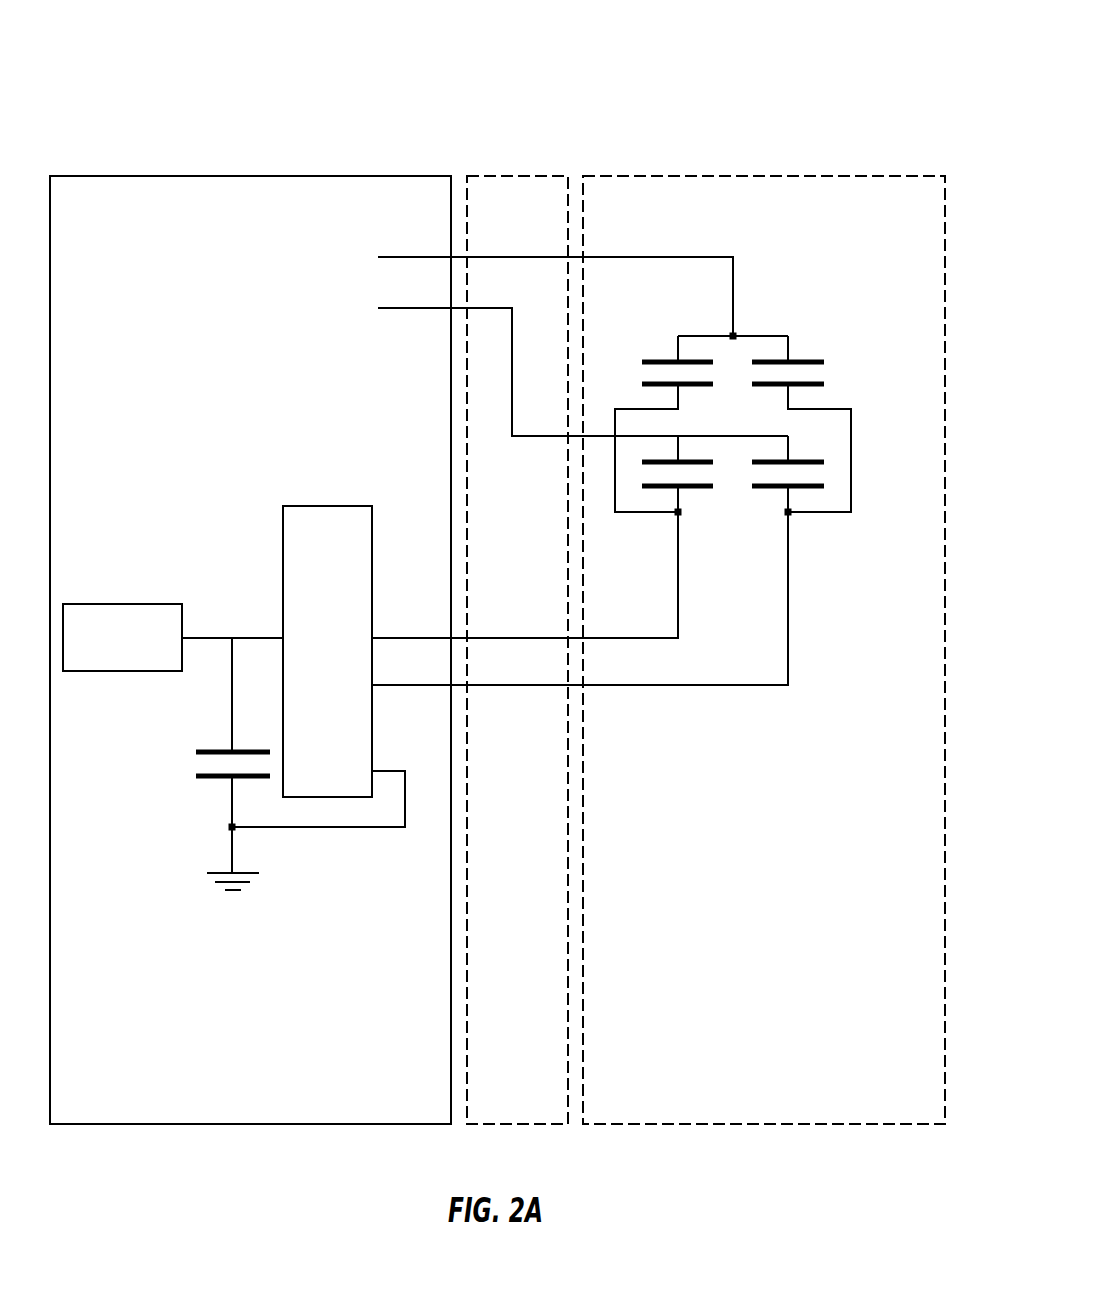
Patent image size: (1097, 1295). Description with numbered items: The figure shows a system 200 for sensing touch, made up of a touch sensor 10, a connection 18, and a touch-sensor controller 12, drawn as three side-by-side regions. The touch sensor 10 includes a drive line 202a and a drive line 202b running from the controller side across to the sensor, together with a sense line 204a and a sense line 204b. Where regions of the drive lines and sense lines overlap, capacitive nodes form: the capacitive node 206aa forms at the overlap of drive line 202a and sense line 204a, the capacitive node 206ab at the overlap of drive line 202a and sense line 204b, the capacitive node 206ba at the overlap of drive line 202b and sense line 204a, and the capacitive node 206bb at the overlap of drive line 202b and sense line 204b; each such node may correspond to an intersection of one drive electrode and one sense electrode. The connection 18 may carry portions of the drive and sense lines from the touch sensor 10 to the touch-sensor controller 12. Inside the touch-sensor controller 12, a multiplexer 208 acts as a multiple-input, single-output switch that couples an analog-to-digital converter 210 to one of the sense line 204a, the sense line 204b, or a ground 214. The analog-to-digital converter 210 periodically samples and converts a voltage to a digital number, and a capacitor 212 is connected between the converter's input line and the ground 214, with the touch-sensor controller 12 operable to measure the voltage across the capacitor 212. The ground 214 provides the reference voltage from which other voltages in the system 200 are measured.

The system 200 is at (838, 66).
The touch-sensor controller 12 is at (251, 175).
The connection 18 is at (513, 175).
The touch sensor 10 is at (745, 175).
The drive line 202a is at (393, 259).
The drive line 202b is at (393, 310).
The sense line 204a is at (428, 636).
The sense line 204b is at (428, 687).
The capacitive node 206aa is at (643, 372).
The capacitive node 206ab is at (837, 350).
The capacitive node 206ba is at (643, 474).
The capacitive node 206bb is at (822, 474).
The multiplexer 208 is at (282, 512).
The analog-to-digital converter 210 is at (123, 604).
The capacitor 212 is at (198, 759).
The ground 214 is at (240, 883).